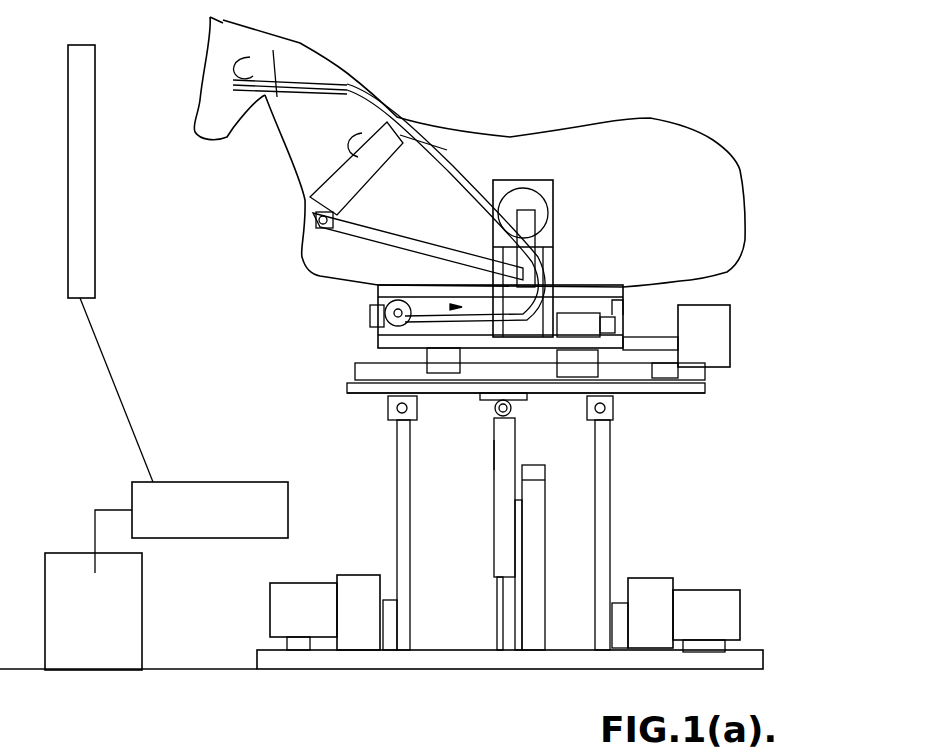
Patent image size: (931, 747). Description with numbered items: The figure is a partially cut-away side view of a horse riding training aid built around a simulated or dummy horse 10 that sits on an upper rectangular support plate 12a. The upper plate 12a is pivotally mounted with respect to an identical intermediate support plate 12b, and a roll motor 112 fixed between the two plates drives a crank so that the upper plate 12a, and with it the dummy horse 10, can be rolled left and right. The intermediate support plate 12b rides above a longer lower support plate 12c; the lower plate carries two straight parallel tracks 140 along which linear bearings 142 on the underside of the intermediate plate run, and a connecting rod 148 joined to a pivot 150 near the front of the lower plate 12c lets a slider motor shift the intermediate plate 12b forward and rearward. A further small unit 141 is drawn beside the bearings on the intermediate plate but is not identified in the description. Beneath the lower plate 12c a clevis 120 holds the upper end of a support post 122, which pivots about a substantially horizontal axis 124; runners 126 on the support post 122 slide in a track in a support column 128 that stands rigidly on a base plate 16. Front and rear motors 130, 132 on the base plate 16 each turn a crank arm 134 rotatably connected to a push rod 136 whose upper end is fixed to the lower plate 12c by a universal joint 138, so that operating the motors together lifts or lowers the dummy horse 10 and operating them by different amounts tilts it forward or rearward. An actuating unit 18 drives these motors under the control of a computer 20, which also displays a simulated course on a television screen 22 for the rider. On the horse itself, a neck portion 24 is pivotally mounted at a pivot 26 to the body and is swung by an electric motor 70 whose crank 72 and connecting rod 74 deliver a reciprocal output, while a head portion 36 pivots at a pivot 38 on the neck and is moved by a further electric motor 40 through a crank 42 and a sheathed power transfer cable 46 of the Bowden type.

The simulated horse 10 is at (638, 115).
The upper rectangular support plate 12a is at (623, 285).
The intermediate support plate 12b is at (625, 340).
The lower support plate 12c is at (705, 393).
The base plate 16 is at (760, 653).
The actuating unit 18 is at (70, 620).
The computer 20 is at (190, 520).
The television screen 22 is at (95, 97).
The neck portion 24 is at (350, 78).
The pivot 26 is at (373, 157).
The head portion 36 is at (200, 127).
The pivot 38 is at (273, 65).
The electric motor 40 is at (370, 297).
The crank 42 is at (372, 324).
The sheathed power transfer cable 46 is at (448, 147).
The electric motor 70 is at (543, 217).
The crank 72 is at (552, 246).
The connecting rod 74 is at (398, 232).
The roll motor 112 is at (578, 325).
The clevis 120 is at (490, 407).
The support post 122 is at (498, 460).
The horizontal axis 124 is at (513, 410).
The runners 126 is at (545, 478).
The support column 128 is at (497, 628).
The front motor 130 is at (290, 577).
The rear motor 132 is at (695, 580).
The crank arm 134 is at (390, 575).
The push rod 136 is at (400, 463).
The universal joint 138 is at (383, 410).
The tracks 140 is at (713, 375).
The actuator unit 141 is at (443, 360).
The linear bearings 142 is at (577, 363).
The connecting rod 148 is at (377, 363).
The pivot 150 is at (357, 381).